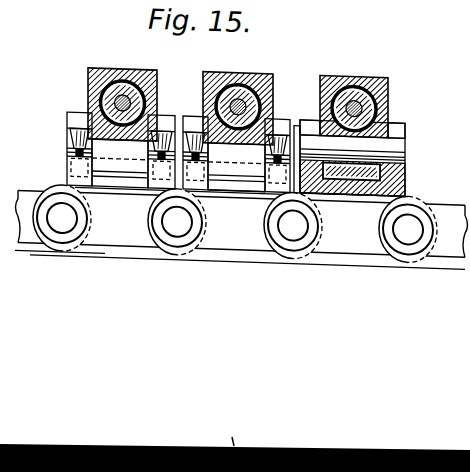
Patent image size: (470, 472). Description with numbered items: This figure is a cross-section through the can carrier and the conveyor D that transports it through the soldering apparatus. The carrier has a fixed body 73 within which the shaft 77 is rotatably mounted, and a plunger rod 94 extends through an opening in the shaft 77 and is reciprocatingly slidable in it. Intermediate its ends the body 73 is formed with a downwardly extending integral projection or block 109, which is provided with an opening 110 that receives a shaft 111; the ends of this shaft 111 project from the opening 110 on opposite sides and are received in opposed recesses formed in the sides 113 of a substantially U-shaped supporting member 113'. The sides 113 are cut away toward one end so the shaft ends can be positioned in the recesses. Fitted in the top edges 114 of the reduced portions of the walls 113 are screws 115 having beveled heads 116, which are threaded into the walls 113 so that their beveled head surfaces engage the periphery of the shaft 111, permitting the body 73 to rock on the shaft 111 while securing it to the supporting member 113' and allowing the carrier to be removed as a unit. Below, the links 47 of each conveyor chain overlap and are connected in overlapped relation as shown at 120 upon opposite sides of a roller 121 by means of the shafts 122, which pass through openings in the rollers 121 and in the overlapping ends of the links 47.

The conveyor chains 47 is at (125, 235).
The fixed body 73 is at (158, 69).
The shaft 77 is at (319, 72).
The plunger rod 94 is at (128, 88).
The projection or block 109 is at (380, 156).
The opening 110 is at (392, 98).
The shaft 111 is at (393, 136).
The sides 113 is at (365, 144).
The supporting member 113' is at (306, 213).
The top edges 114 is at (78, 163).
The screws 115 is at (198, 129).
The beveled heads 116 is at (80, 137).
The overlapped connection 120 is at (67, 237).
The roller 121 is at (182, 249).
The shafts 122 is at (408, 221).
The conveyor D is at (284, 245).